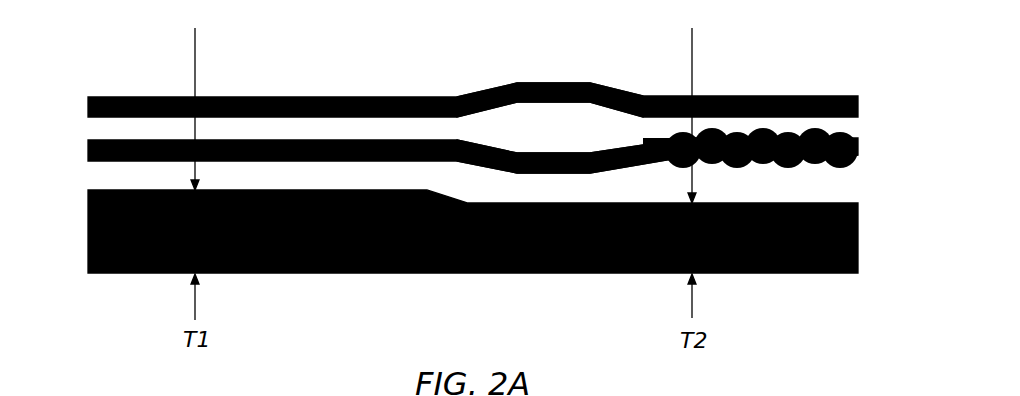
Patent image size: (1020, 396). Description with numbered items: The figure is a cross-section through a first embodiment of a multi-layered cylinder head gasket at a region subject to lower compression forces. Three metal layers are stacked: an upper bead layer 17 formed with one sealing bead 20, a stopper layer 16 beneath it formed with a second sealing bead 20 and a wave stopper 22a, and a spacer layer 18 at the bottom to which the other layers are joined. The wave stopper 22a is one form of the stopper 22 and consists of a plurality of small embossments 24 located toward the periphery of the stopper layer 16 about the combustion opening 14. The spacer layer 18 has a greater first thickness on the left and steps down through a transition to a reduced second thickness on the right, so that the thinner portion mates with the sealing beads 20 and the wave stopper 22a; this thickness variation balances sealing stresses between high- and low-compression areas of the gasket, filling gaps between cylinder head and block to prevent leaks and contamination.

The combustion opening 14 is at (900, 204).
The stopper layer 16 is at (88, 150).
The bead layer 17 is at (86, 98).
The spacer layer 18 is at (88, 262).
The sealing bead 20 is at (540, 84).
The stopper 22 is at (832, 131).
The wave stopper 22a is at (860, 153).
The embossments 24 is at (765, 128).